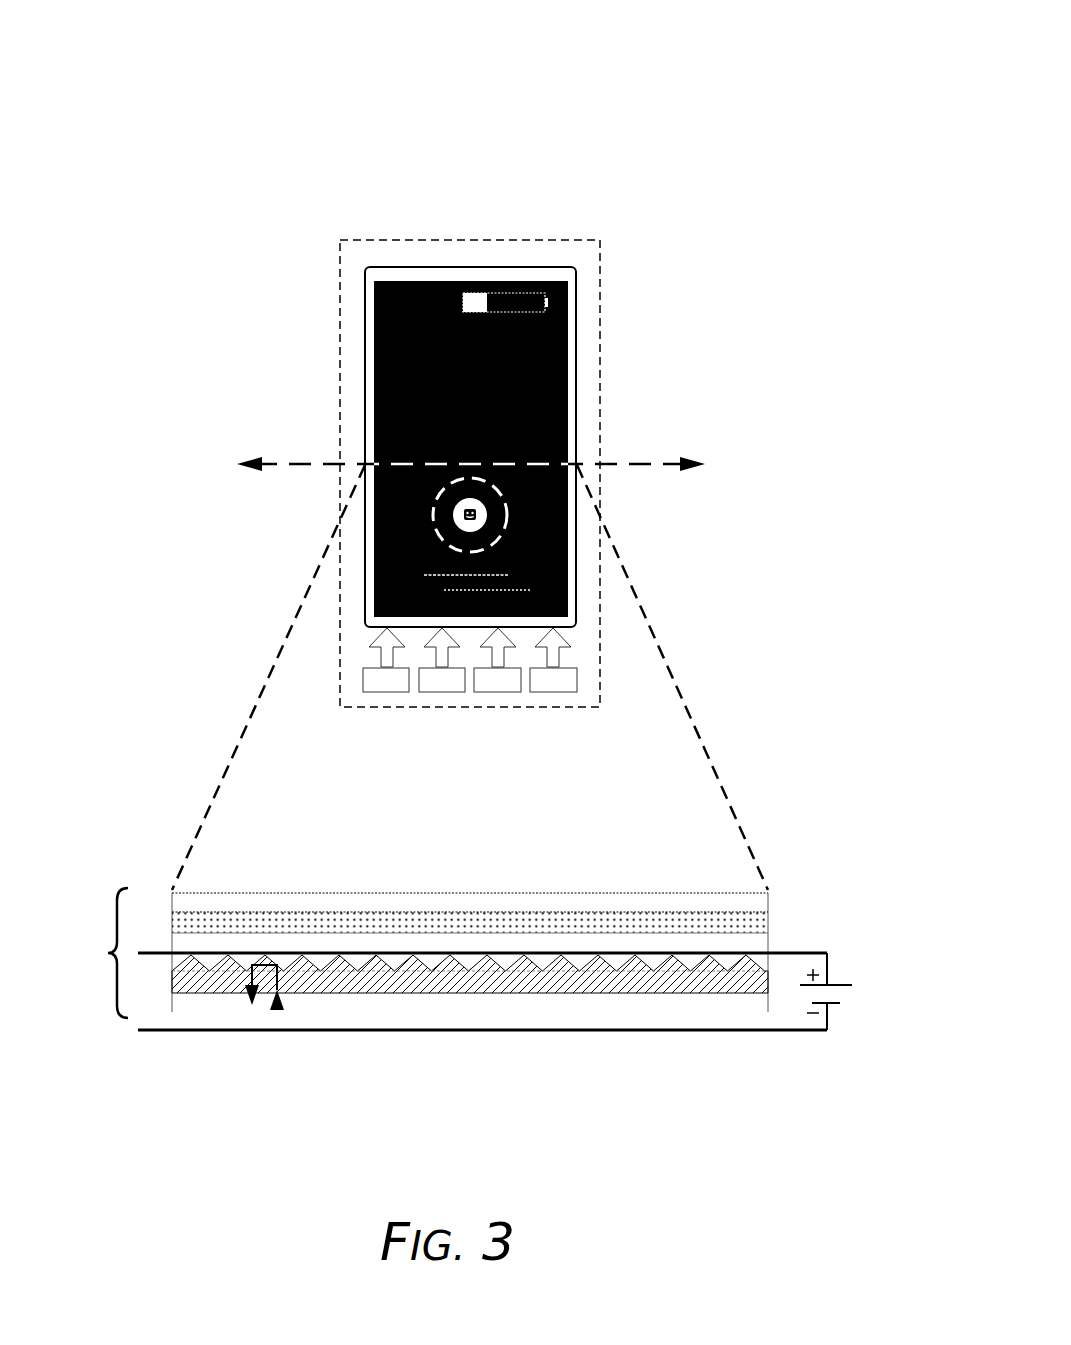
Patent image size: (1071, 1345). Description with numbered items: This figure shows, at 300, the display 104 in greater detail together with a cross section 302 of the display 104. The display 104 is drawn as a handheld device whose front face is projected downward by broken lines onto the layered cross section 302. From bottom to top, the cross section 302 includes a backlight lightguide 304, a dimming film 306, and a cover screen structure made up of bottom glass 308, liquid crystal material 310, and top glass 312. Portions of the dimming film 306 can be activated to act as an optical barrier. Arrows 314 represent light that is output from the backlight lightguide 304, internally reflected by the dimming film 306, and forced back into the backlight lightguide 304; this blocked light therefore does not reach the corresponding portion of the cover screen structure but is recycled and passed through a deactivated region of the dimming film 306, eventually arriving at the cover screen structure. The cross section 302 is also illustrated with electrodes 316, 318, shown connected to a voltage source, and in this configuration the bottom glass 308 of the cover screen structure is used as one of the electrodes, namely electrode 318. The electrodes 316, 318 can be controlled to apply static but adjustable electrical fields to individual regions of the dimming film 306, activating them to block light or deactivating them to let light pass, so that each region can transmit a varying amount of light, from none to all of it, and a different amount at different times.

The view of display 300 is at (668, 66).
The display 104 is at (521, 267).
The cross section 302 is at (456, 960).
The backlight lightguide 304 is at (365, 998).
The dimming film 306 is at (480, 977).
The bottom glass 308 is at (350, 942).
The liquid crystal material 310 is at (445, 921).
The top glass 312 is at (560, 905).
The arrows 314 is at (250, 1003).
The electrode 316 is at (657, 1030).
The electrode 318 is at (713, 953).